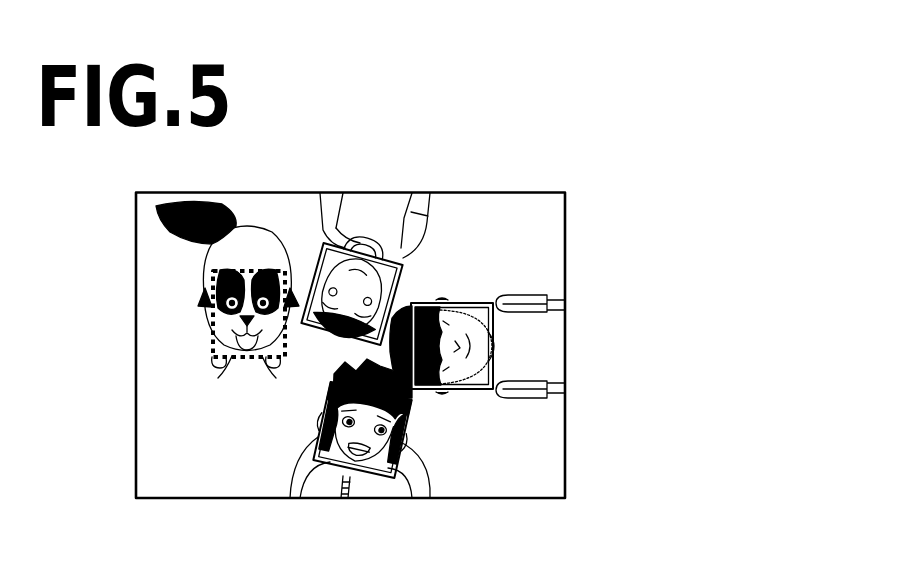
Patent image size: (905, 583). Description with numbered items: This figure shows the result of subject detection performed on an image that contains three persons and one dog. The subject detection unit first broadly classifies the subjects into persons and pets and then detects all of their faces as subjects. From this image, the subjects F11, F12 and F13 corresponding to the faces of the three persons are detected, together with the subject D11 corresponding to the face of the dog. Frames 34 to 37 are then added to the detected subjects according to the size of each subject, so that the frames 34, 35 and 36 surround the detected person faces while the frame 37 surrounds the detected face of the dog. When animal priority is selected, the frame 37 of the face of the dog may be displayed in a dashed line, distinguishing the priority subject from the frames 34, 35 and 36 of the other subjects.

The frame 34 is at (321, 435).
The frame 35 is at (477, 391).
The frame 36 is at (405, 287).
The frame of the face of the dog 37 is at (207, 335).
The subject F11 is at (398, 455).
The subject F12 is at (468, 300).
The subject F13 is at (332, 225).
The subject D11 is at (237, 365).